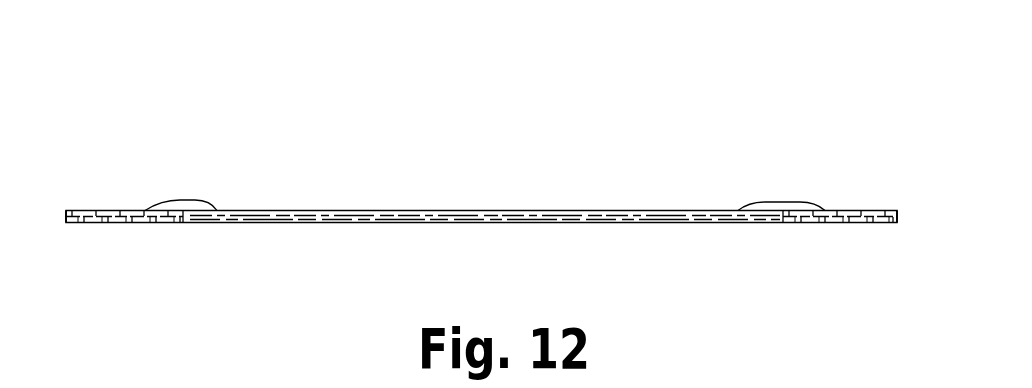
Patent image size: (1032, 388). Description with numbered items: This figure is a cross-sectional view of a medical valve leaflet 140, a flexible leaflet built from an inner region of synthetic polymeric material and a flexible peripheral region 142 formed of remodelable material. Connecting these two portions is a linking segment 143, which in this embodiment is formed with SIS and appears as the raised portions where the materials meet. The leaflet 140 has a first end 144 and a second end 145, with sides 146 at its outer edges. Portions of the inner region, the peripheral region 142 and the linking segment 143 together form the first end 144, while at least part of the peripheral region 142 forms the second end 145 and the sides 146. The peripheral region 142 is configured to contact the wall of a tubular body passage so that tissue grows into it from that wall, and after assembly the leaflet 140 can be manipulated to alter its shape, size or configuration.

The medical valve leaflet 140 is at (309, 94).
The flexible peripheral region 142 is at (118, 217).
The linking segment 143 is at (270, 202).
The first end 144 is at (322, 223).
The second end 145 is at (543, 210).
The sides 146 is at (68, 223).